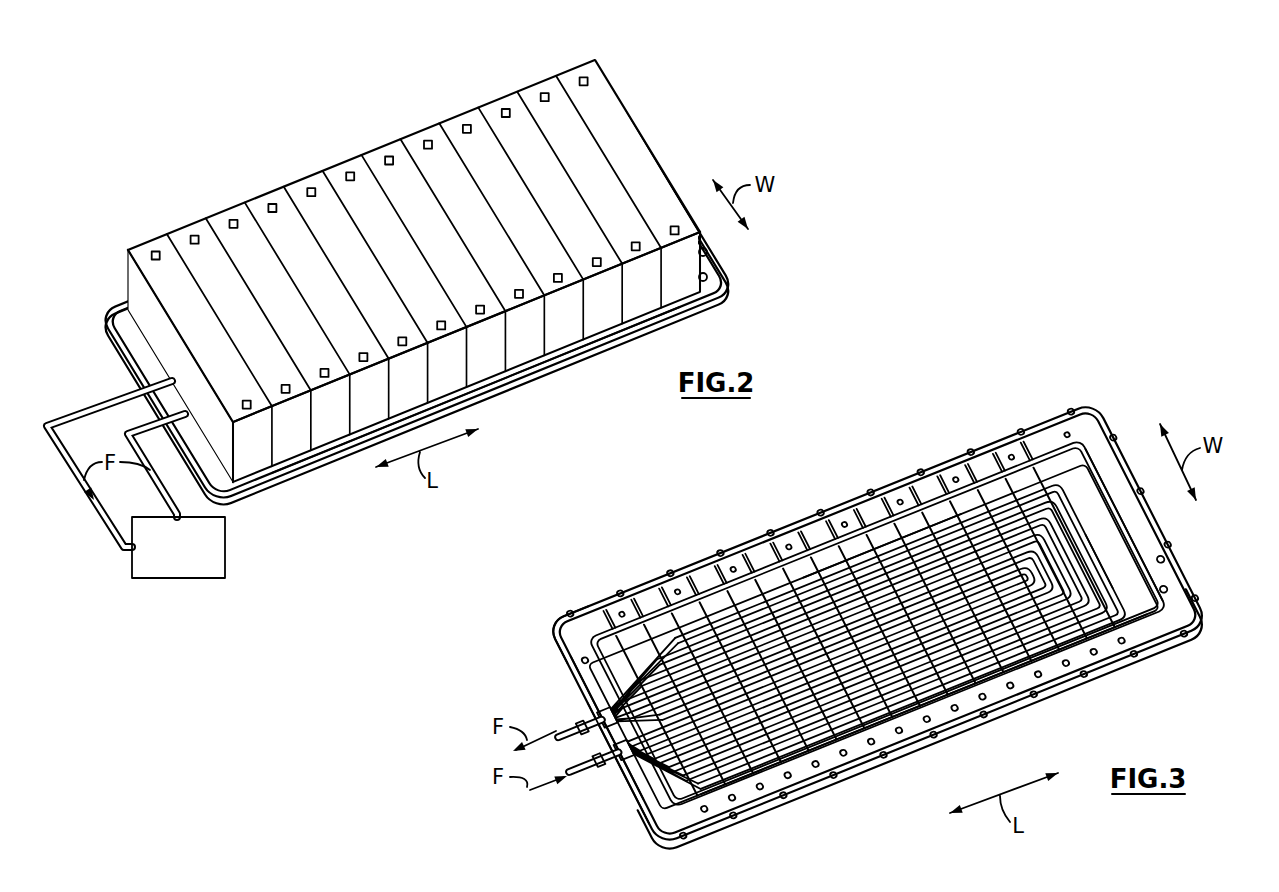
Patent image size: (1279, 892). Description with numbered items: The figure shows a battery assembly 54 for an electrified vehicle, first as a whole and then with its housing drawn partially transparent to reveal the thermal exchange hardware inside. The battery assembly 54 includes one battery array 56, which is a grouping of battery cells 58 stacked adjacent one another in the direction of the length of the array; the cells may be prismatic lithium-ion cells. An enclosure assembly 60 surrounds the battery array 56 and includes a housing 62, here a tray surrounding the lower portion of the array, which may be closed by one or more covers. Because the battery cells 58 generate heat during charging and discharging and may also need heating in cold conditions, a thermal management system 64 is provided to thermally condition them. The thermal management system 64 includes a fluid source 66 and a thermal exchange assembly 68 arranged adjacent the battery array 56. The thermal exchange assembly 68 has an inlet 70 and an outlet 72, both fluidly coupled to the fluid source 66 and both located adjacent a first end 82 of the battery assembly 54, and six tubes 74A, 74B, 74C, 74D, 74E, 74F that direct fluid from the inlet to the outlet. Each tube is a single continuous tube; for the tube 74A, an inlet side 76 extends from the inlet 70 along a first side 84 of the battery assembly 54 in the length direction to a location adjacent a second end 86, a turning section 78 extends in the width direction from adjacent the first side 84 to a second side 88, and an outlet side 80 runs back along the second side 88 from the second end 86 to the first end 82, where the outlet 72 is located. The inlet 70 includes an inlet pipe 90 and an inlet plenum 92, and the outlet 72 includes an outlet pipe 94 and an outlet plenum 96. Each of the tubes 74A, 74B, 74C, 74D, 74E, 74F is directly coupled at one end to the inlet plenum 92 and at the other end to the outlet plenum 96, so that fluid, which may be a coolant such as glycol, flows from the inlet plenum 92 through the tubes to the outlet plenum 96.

In FIG. 2, the battery assembly 54 is at (490, 271).
In FIG. 2, the battery array 56 is at (681, 162).
In FIG. 2, the battery cells 58 is at (572, 76).
In FIG. 2, the enclosure assembly 60 is at (414, 257).
In FIG. 2, the housing 62 is at (519, 382).
In FIG. 3, the housing 62 is at (863, 626).
In FIG. 2, the thermal management system 64 is at (155, 489).
In FIG. 2, the fluid source 66 is at (150, 582).
In FIG. 3, the thermal exchange assembly 68 is at (913, 639).
In FIG. 2, the inlet 70 is at (165, 441).
In FIG. 3, the inlet 70 is at (603, 778).
In FIG. 2, the outlet 72 is at (131, 379).
In FIG. 3, the outlet 72 is at (558, 709).
In FIG. 3, the tube 74A is at (823, 790).
In FIG. 3, the tube 74B is at (880, 770).
In FIG. 3, the tube 74C is at (903, 748).
In FIG. 3, the tube 74D is at (970, 737).
In FIG. 3, the tube 74E is at (1013, 708).
In FIG. 3, the tube 74F is at (1060, 690).
In FIG. 3, the inlet side 76 is at (775, 771).
In FIG. 3, the turning section 78 is at (1112, 556).
In FIG. 3, the outlet side 80 is at (879, 547).
In FIG. 3, the first end 82 is at (546, 656).
In FIG. 3, the first side 84 is at (1128, 666).
In FIG. 3, the second end 86 is at (1172, 498).
In FIG. 3, the second side 88 is at (947, 458).
In FIG. 3, the inlet pipe 90 is at (583, 785).
In FIG. 3, the inlet plenum 92 is at (650, 822).
In FIG. 3, the outlet pipe 94 is at (577, 745).
In FIG. 3, the outlet plenum 96 is at (562, 626).